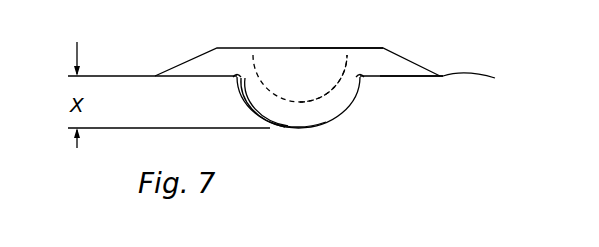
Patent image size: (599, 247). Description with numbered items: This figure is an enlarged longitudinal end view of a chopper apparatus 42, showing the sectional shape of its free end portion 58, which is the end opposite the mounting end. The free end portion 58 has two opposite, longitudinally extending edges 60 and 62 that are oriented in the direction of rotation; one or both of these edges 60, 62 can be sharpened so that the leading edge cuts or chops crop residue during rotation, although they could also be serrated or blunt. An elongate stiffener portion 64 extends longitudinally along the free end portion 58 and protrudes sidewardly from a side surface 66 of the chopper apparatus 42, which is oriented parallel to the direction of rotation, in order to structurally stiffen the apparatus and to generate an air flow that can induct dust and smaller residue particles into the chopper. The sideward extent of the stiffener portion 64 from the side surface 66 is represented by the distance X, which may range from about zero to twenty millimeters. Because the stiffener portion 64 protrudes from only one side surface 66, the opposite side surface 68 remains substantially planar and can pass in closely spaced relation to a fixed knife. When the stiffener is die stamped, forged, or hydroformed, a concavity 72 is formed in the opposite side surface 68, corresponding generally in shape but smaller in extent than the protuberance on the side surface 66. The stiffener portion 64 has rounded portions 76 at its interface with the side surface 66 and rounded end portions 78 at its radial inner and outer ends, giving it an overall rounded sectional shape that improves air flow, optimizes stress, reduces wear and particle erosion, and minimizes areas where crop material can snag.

The chopper apparatus 42 is at (427, 62).
The free end portion 58 is at (372, 55).
The longitudinally extending edge 60 is at (443, 83).
The longitudinally extending edge 62 is at (156, 75).
The stiffener portion 64 is at (353, 98).
The side surface 66 is at (410, 77).
The opposite side surface 68 is at (282, 47).
The concavity 72 is at (335, 65).
The rounded portions 76 is at (237, 77).
The rounded end portions 78 is at (327, 100).